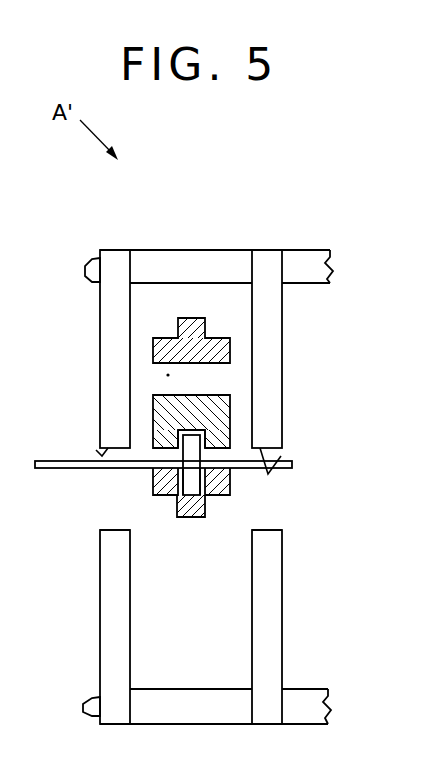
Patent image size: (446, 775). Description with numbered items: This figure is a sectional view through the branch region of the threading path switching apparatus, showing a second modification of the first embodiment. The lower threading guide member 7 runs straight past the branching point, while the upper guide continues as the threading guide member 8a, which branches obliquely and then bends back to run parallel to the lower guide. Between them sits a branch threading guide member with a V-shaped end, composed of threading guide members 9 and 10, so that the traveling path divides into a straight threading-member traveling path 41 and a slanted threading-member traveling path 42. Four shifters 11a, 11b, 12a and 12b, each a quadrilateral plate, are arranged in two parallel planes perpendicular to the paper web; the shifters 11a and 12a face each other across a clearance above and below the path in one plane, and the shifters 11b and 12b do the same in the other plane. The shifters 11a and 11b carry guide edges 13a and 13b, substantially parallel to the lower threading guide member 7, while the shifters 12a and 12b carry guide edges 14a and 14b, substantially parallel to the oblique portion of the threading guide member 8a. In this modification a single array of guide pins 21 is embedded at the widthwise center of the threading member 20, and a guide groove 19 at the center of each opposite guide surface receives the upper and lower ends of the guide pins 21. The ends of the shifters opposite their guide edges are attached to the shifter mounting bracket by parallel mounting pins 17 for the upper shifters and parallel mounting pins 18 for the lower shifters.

The lower threading guide member 7 is at (187, 503).
The threading guide member 8a is at (195, 333).
The threading guide member 9 is at (251, 384).
The threading guide member 10 is at (197, 404).
The shifter 11a is at (115, 265).
The shifter 11b is at (270, 272).
The shifter 12a is at (118, 608).
The shifter 12b is at (272, 605).
The guide edge 13a is at (102, 456).
The guide edge 13b is at (281, 456).
The guide edge 14a is at (80, 533).
The guide edge 14b is at (305, 536).
The parallel mounting pins 17 is at (232, 262).
The parallel mounting pins 18 is at (193, 700).
The guide groove 19 is at (195, 436).
The threading member 20 is at (189, 484).
The guide pins 21 is at (193, 480).
The straight threading-member traveling path 41 is at (163, 453).
The slanted threading-member traveling path 42 is at (168, 375).